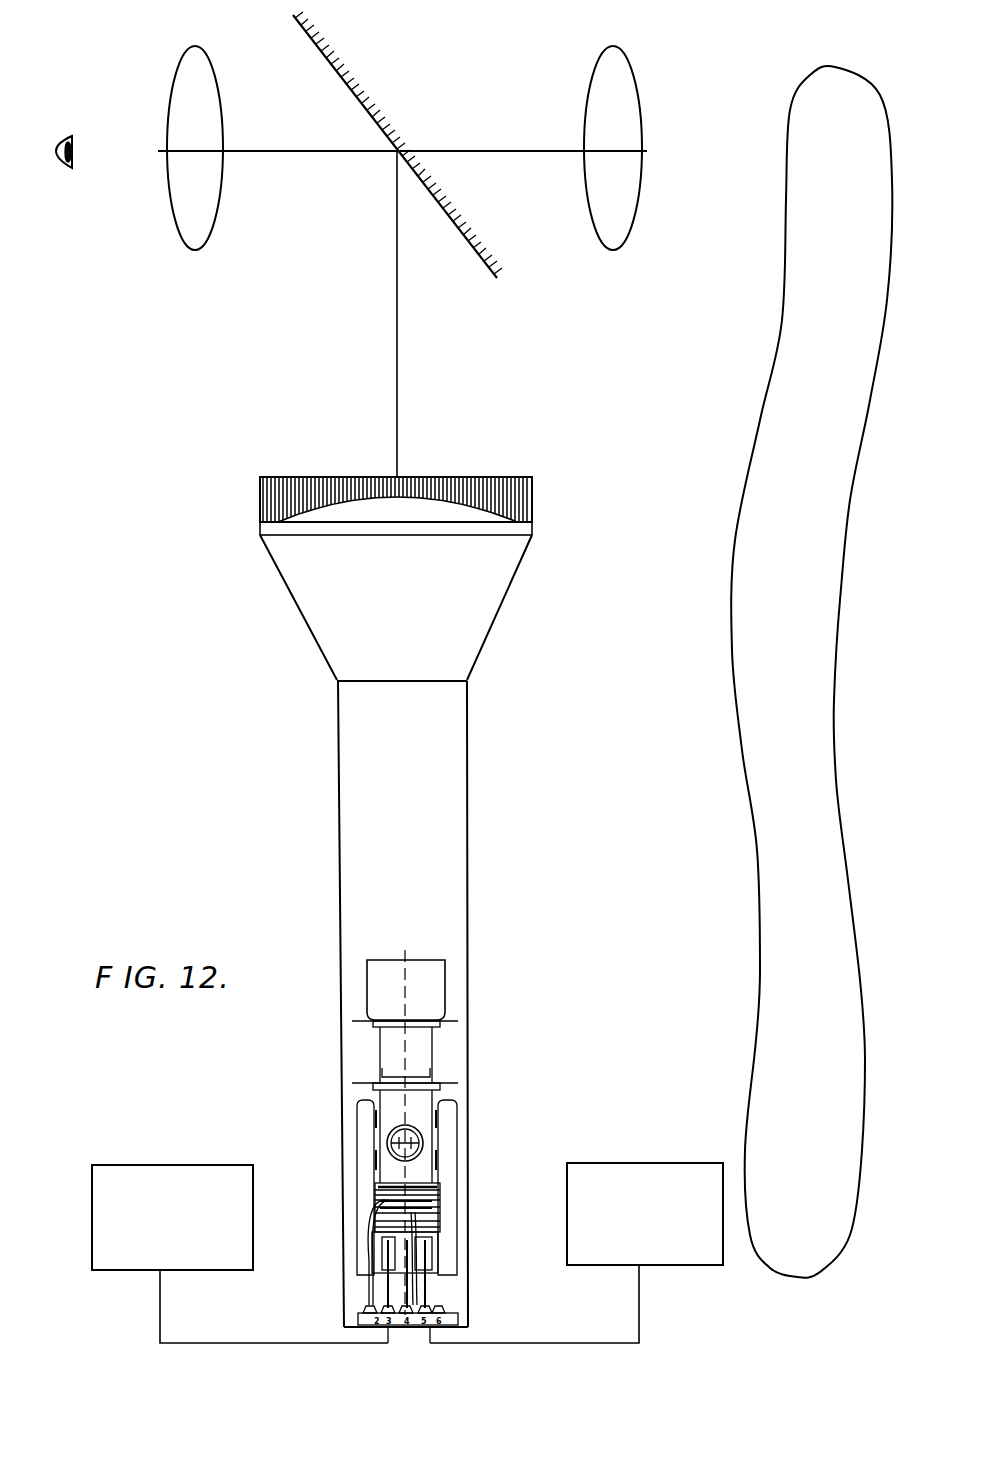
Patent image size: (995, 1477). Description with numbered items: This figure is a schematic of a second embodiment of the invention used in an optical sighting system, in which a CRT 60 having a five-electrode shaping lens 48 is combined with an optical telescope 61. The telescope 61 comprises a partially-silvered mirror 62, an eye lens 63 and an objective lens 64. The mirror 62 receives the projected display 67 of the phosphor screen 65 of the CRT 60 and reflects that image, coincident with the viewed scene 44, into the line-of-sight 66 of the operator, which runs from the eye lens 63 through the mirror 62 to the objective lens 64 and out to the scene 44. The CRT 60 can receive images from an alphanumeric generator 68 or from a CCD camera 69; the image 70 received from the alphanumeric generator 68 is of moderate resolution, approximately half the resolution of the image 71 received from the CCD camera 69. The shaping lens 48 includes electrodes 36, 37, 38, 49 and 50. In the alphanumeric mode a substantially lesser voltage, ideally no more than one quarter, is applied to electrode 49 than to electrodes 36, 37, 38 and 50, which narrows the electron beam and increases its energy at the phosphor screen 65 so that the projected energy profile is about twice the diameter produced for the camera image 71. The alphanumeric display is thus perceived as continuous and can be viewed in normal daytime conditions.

The electrode 36 is at (375, 1225).
The electrode 37 is at (447, 1216).
The electrode 38 is at (375, 1210).
The viewed scene 44 is at (802, 599).
The five-electrode shaping lens 48 is at (458, 1188).
The electrode 49 is at (445, 1195).
The electrode 50 is at (375, 1188).
The CRT 60 is at (467, 880).
The optical telescope 61 is at (422, 12).
The partially-silvered mirror 62 is at (311, 42).
The eye lens 63 is at (176, 70).
The objective lens 64 is at (590, 78).
The phosphor screen 65 is at (492, 477).
The line-of-sight 66 is at (297, 153).
The projected display 67 is at (397, 318).
The alphanumeric generator 68 is at (190, 1256).
The CCD camera 69 is at (660, 1252).
The image 70 is at (273, 1343).
The image 71 is at (537, 1343).